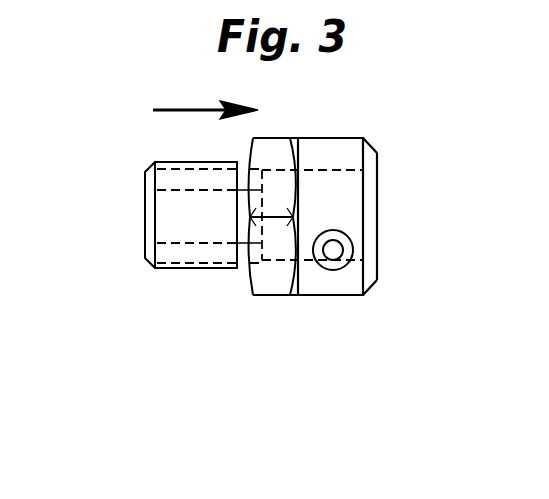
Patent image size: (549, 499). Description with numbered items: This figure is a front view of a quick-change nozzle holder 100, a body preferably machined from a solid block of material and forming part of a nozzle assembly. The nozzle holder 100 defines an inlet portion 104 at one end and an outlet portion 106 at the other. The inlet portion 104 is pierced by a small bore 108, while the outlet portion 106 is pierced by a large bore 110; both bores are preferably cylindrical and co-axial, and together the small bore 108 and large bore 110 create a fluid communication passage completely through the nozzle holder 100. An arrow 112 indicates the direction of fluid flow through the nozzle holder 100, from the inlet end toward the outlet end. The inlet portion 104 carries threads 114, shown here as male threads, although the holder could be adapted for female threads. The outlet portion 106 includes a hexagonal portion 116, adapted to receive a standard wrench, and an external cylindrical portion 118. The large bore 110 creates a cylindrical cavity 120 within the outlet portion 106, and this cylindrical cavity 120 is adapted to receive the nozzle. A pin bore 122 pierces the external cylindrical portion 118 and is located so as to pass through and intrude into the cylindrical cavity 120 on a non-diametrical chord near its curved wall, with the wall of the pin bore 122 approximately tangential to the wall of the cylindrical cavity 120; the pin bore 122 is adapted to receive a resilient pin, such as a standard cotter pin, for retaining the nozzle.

The nozzle holder 100 is at (146, 129).
The inlet portion 104 is at (188, 270).
The outlet portion 106 is at (316, 148).
The small bore 108 is at (145, 196).
The large bore 110 is at (378, 200).
The arrow 112 is at (186, 108).
The threads 114 is at (178, 244).
The hexagonal portion 116 is at (270, 296).
The external cylindrical portion 118 is at (352, 138).
The cylindrical cavity 120 is at (340, 168).
The pin bore 122 is at (335, 250).